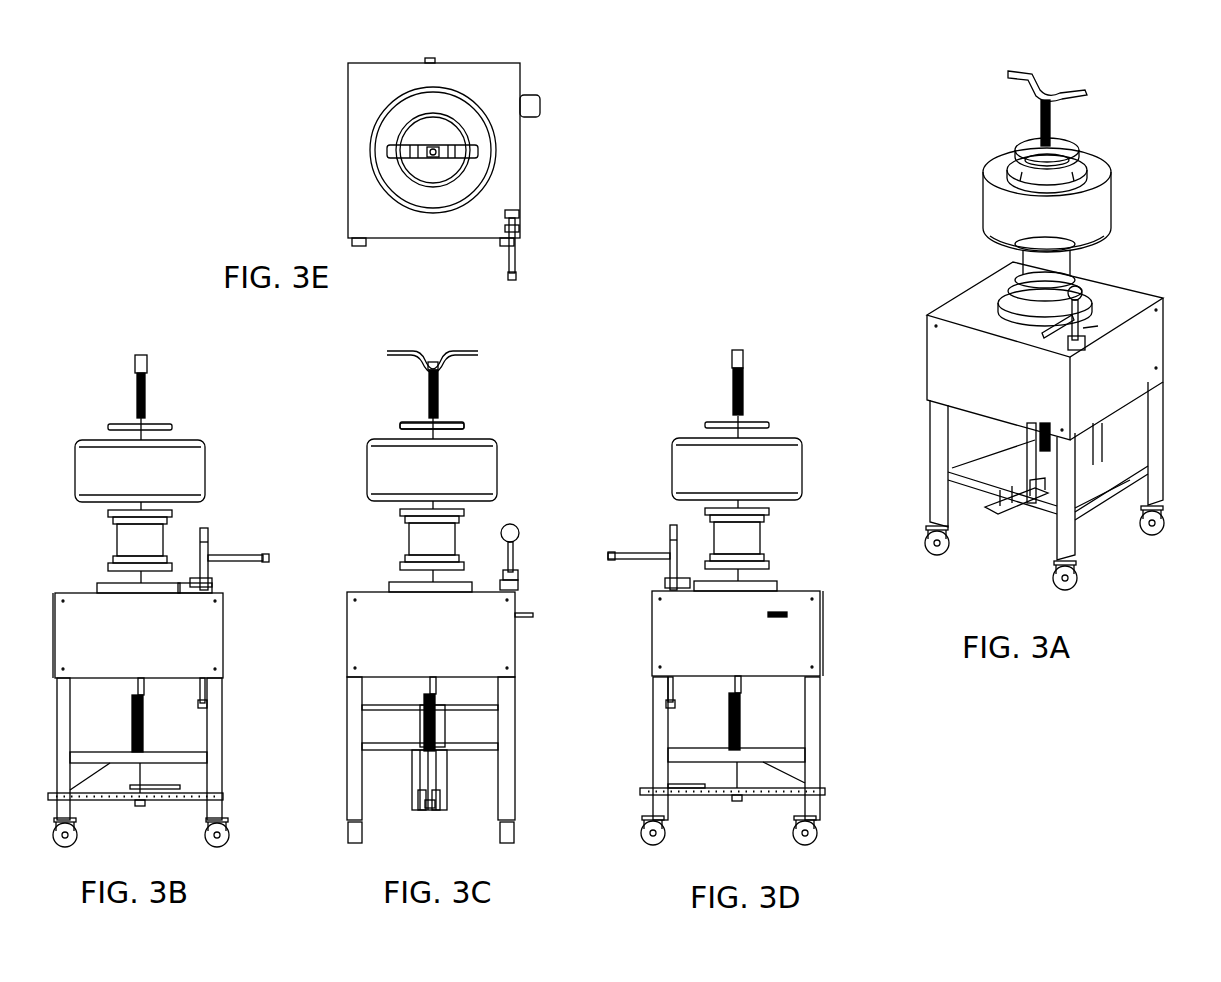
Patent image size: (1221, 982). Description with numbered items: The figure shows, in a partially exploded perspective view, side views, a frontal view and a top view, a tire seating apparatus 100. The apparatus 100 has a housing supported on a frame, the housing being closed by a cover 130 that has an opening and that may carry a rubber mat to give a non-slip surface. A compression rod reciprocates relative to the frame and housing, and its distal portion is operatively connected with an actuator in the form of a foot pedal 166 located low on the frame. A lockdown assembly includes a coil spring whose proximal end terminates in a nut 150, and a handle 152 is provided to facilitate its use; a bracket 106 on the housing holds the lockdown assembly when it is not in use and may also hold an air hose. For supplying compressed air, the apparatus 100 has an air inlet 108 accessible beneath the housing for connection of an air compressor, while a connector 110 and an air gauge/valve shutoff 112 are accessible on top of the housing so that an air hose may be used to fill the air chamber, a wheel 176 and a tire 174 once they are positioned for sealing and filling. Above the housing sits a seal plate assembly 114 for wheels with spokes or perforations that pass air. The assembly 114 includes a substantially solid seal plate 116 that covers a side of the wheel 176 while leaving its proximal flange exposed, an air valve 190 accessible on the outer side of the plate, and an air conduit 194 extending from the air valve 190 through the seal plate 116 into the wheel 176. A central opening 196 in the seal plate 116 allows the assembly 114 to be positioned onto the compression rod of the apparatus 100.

In FIG. 3E, the tire seating apparatus 100 is at (489, 170).
In FIG. 3A, the tire seating apparatus 100 is at (1028, 330).
In FIG. 3B, the tire seating apparatus 100 is at (174, 601).
In FIG. 3C, the tire seating apparatus 100 is at (473, 597).
In FIG. 3D, the tire seating apparatus 100 is at (765, 597).
In FIG. 3A, the bracket 106 is at (1162, 340).
In FIG. 3B, the air inlet 108 is at (199, 700).
In FIG. 3A, the connector 110 is at (1060, 332).
In FIG. 3D, the connector 110 is at (642, 551).
In FIG. 3A, the air gauge/valve shutoff 112 is at (1083, 317).
In FIG. 3C, the air gauge/valve shutoff 112 is at (514, 530).
In FIG. 3C, the seal plate assembly 114 is at (467, 407).
In FIG. 3A, the seal plate 116 is at (1068, 145).
In FIG. 3C, the seal plate 116 is at (412, 421).
In FIG. 3E, the cover 130 is at (388, 93).
In FIG. 3E, the nut 150 is at (434, 147).
In FIG. 3E, the handle 152 is at (468, 152).
In FIG. 3A, the foot pedal 166 is at (1000, 512).
In FIG. 3E, the tire 174 is at (428, 200).
In FIG. 3E, the wheel 176 is at (425, 168).
In FIG. 3A, the air valve 190 is at (1058, 152).
In FIG. 3A, the air conduit 194 is at (1068, 180).
In FIG. 3A, the central opening 196 is at (1040, 149).